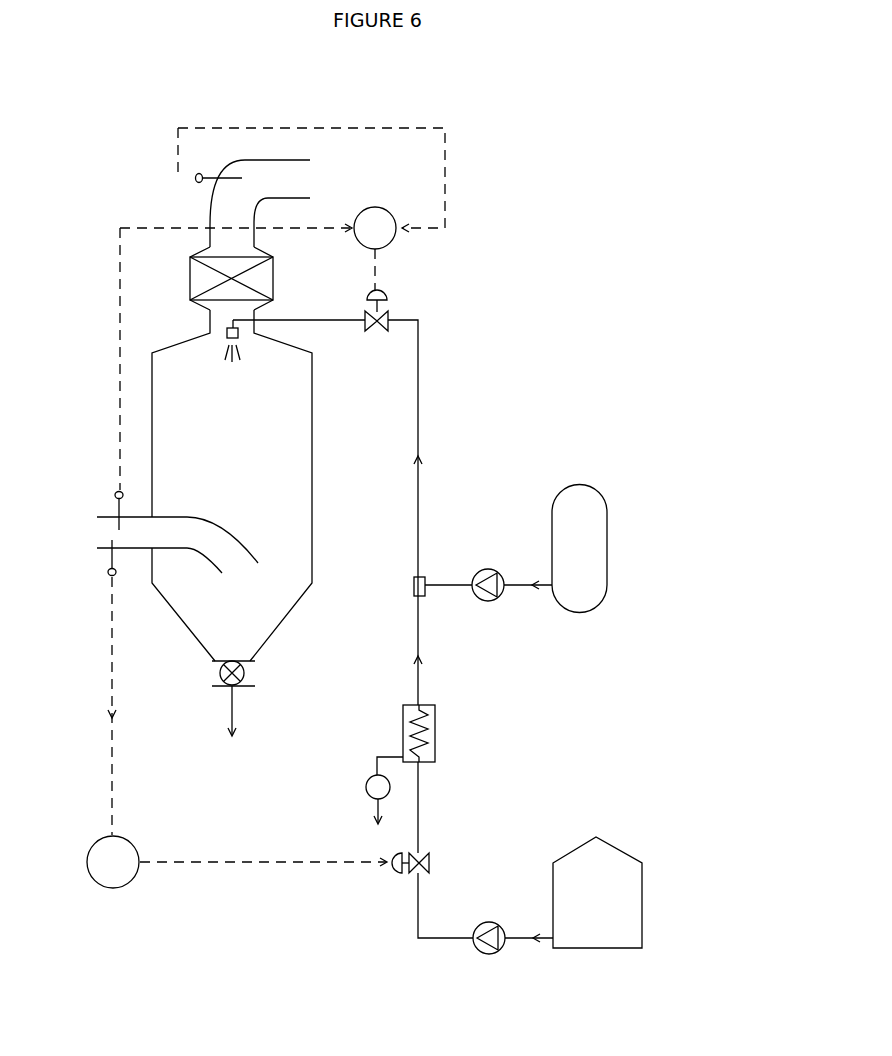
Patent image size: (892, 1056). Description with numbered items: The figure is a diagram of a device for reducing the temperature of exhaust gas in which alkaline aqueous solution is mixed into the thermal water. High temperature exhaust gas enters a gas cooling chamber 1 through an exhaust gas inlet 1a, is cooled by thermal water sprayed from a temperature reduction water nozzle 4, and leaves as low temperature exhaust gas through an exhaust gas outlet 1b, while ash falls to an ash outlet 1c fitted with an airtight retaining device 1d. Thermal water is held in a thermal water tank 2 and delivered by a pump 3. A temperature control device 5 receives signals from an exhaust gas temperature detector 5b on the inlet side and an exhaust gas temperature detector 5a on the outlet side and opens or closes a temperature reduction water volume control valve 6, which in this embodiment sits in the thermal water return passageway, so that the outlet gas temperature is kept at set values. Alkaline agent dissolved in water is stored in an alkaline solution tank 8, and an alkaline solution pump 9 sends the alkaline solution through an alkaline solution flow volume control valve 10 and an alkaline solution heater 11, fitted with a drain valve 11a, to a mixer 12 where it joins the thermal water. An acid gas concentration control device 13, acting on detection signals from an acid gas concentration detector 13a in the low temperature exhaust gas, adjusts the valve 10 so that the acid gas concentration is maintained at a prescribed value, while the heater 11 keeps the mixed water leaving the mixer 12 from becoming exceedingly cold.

The gas cooling chamber 1 is at (312, 445).
The exhaust gas inlet 1a is at (228, 310).
The exhaust gas outlet 1b is at (162, 533).
The ash outlet 1c is at (235, 643).
The airtight retaining device 1d is at (248, 672).
The thermal water tank 2 is at (607, 556).
The pump 3 is at (480, 600).
The temperature reduction water nozzle 4 is at (240, 336).
The temperature control device 5 is at (393, 243).
The exhaust gas temperature detector on the outlet side 5a is at (115, 492).
The exhaust gas temperature detector on the inlet side 5b is at (197, 182).
The temperature reduction water volume control valve 6 is at (392, 318).
The alkaline solution tank 8 is at (580, 950).
The alkaline solution pump 9 is at (478, 952).
The alkaline solution flow volume control valve 10 is at (432, 860).
The alkaline solution heater 11 is at (403, 727).
The drain valve 11a is at (366, 788).
The mixer 12 is at (414, 586).
The acid gas concentration control device 13 is at (106, 888).
The acid gas concentration detector 13a is at (109, 576).